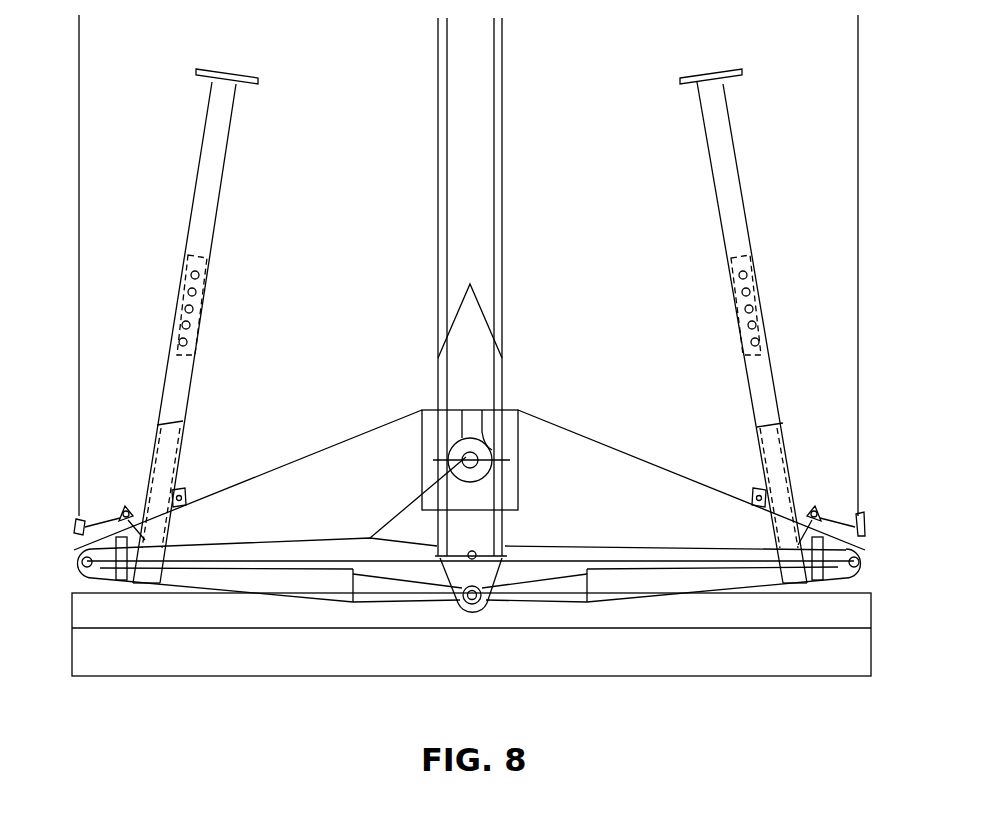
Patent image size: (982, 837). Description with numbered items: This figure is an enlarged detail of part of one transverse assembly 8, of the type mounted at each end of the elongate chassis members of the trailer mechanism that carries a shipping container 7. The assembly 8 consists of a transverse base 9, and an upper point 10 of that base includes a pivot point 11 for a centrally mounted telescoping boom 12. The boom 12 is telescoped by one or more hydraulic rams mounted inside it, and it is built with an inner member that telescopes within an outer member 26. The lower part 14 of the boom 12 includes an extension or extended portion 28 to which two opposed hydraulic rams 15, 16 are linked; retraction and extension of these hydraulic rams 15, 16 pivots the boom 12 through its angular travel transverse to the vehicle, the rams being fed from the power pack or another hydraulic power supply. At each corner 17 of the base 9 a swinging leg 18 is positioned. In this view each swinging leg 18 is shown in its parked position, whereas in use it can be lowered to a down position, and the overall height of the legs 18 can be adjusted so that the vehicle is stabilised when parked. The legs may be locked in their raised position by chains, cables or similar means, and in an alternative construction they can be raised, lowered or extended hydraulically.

The shipping container 7 is at (861, 82).
The transverse assembly 8 is at (618, 366).
The transverse base 9 is at (624, 461).
The upper point 10 is at (507, 409).
The pivot point 11 is at (465, 453).
The telescoping boom 12 is at (496, 168).
The lower part of the boom 14 is at (474, 612).
The hydraulic ram 15 is at (240, 588).
The hydraulic ram 16 is at (696, 587).
The corner of the base 17 is at (78, 583).
The swinging leg 18 is at (208, 217).
The outer boom member 26 is at (450, 203).
The extended portion 28 is at (489, 530).